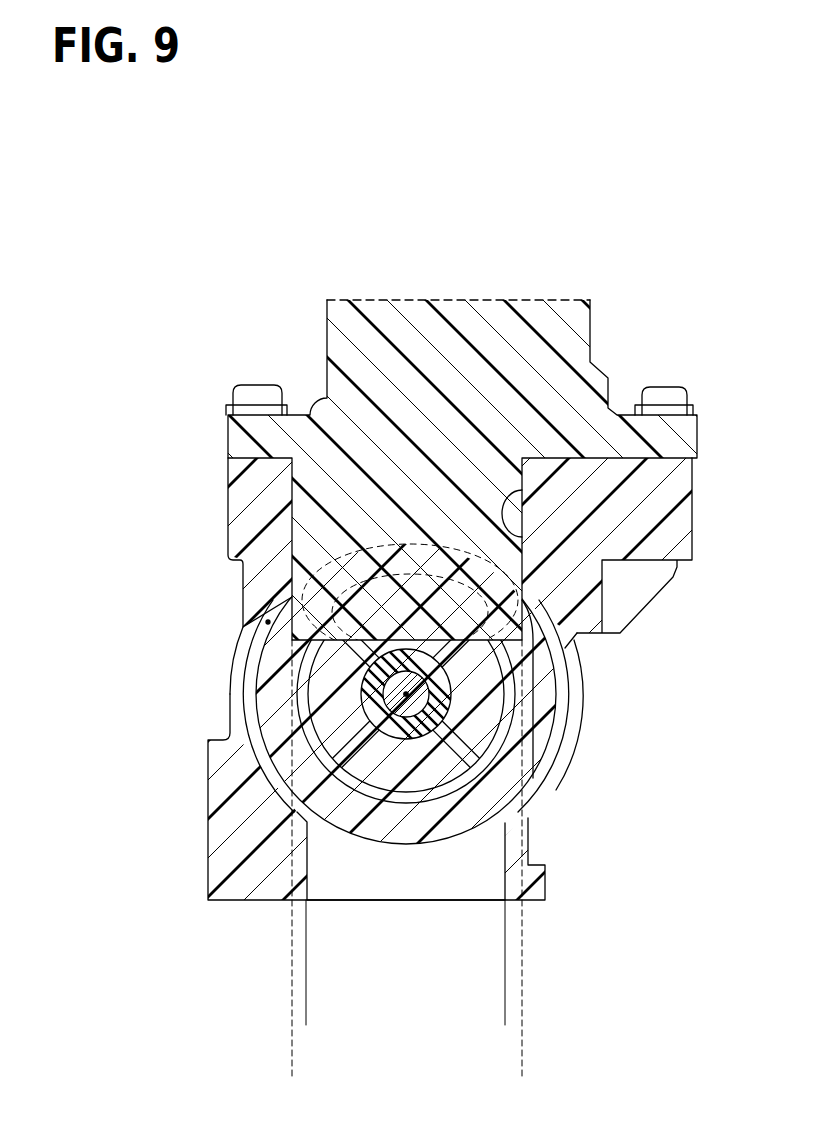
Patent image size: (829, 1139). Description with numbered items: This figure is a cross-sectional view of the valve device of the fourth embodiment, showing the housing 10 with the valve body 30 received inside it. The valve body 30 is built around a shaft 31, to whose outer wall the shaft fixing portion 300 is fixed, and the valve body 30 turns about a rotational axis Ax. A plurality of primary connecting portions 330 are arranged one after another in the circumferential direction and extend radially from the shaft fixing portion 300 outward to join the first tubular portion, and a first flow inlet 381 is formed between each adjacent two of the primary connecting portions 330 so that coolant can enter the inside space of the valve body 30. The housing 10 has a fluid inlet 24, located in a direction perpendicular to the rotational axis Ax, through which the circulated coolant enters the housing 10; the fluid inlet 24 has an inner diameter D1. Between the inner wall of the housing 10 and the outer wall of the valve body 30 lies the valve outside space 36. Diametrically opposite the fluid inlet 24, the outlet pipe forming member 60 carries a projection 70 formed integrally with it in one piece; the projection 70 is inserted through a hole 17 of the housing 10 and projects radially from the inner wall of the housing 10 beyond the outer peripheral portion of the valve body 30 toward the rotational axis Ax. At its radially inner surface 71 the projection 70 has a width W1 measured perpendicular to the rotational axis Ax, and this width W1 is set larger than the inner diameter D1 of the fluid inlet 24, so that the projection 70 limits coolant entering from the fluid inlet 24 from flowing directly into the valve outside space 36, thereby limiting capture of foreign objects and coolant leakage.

The outlet pipe forming member 60 is at (497, 320).
The housing 10 is at (637, 492).
The hole 17 is at (518, 532).
The projection 70 is at (400, 607).
The valve outside space 36 is at (268, 622).
The valve body 30 is at (236, 812).
The primary connecting portions 330 is at (533, 750).
The first flow inlet 381 is at (332, 665).
The shaft fixing portion 300 is at (482, 712).
The shaft 31 is at (453, 671).
The rotational axis Ax is at (406, 694).
The surface 71 is at (565, 655).
The fluid inlet 24 is at (400, 900).
The inner diameter D1 is at (505, 1017).
The width W1 is at (522, 1070).